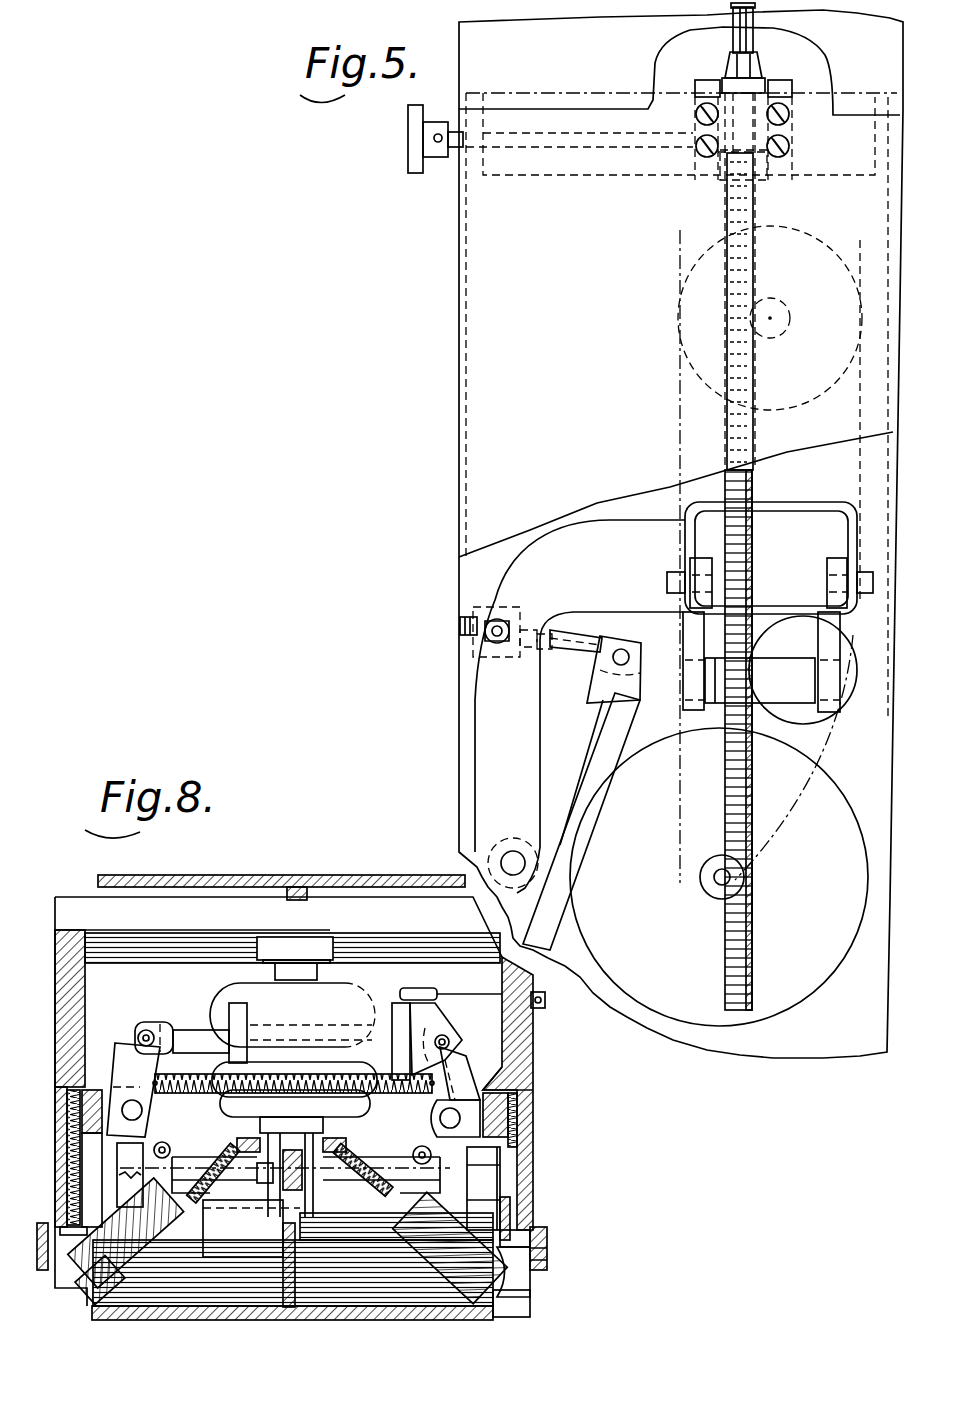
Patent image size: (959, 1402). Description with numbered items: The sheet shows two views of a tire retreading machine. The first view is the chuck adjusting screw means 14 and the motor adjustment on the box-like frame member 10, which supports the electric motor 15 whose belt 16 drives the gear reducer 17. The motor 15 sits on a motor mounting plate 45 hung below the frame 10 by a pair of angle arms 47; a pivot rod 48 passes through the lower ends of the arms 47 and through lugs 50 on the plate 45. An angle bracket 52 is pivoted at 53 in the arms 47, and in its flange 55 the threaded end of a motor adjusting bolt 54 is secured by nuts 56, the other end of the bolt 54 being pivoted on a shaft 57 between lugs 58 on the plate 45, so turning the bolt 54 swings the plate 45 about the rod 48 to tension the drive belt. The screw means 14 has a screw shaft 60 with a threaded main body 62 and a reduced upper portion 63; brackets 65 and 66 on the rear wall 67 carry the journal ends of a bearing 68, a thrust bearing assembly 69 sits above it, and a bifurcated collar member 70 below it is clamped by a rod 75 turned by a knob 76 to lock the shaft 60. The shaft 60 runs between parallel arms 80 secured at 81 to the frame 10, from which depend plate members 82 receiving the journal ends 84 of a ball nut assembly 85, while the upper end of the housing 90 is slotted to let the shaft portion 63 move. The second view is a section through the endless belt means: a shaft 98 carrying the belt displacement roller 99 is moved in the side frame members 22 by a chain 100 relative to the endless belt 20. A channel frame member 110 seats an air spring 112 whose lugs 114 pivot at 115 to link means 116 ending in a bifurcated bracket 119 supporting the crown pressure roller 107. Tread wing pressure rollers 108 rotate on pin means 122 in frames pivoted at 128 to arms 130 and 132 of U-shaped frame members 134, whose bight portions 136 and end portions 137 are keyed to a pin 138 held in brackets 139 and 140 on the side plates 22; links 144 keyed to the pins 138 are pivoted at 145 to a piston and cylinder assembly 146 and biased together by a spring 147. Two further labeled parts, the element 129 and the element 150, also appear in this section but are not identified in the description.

In FIG. 5, the box-like frame member 10 is at (812, 504).
In FIG. 5, the chuck adjusting screw means 14 is at (765, 545).
In FIG. 5, the electric motor 15 is at (808, 996).
In FIG. 5, the belt 16 is at (860, 418).
In FIG. 5, the gear reducer 17 is at (830, 250).
In FIG. 8, the endless belt 20 is at (350, 876).
In FIG. 8, the side frame members 22 is at (70, 930).
In FIG. 5, the motor mounting plate 45 is at (540, 926).
In FIG. 5, the angle arms 47 is at (490, 735).
In FIG. 5, the pivot rod 48 is at (518, 850).
In FIG. 5, the lugs 50 is at (556, 812).
In FIG. 5, the angle bracket 52 is at (462, 614).
In FIG. 5, the pivotal mounting 53 is at (488, 657).
In FIG. 5, the motor adjusting bolt 54 is at (578, 652).
In FIG. 5, the flange 55 is at (528, 625).
In FIG. 5, the nuts 56 is at (560, 628).
In FIG. 5, the shaft 57 is at (628, 660).
In FIG. 5, the lugs 58 is at (600, 700).
In FIG. 5, the screw shaft 60 is at (757, 808).
In FIG. 5, the main body threaded portion 62 is at (752, 930).
In FIG. 5, the reduced shaft upper portion 63 is at (747, 45).
In FIG. 5, the bracket 65 is at (703, 80).
In FIG. 5, the bracket 66 is at (782, 84).
In FIG. 5, the rear wall 67 is at (820, 105).
In FIG. 5, the bearing 68 is at (792, 128).
In FIG. 5, the thrust bearing assembly 69 is at (722, 62).
In FIG. 5, the bifurcated collar member 70 is at (735, 160).
In FIG. 5, the rod 75 is at (638, 145).
In FIG. 5, the knob 76 is at (416, 165).
In FIG. 5, the parallel arms 80 is at (690, 548).
In FIG. 5, the securing point 81 is at (667, 578).
In FIG. 5, the plate members 82 is at (690, 632).
In FIG. 5, the journal ends 84 is at (830, 678).
In FIG. 5, the ball nut assembly 85 is at (700, 742).
In FIG. 5, the housing 90 is at (462, 28).
In FIG. 8, the shaft 98 is at (548, 1268).
In FIG. 8, the belt displacement roller 99 is at (500, 1316).
In FIG. 8, the chain 100 is at (548, 1230).
In FIG. 8, the crown pressure roller 107 is at (230, 1270).
In FIG. 8, the tread wing pressure rollers 108 is at (340, 1162).
In FIG. 8, the channel frame member 110 is at (105, 1010).
In FIG. 8, the air spring 112 is at (222, 1000).
In FIG. 8, the lugs 114 is at (251, 1228).
In FIG. 8, the pivotal connection 115 is at (258, 1175).
In FIG. 8, the link means 116 is at (236, 1143).
In FIG. 8, the bifurcated bracket 119 is at (320, 1138).
In FIG. 8, the bearing supported pin means 122 is at (550, 1203).
In FIG. 8, the pivotal connection 128 is at (148, 1310).
In FIG. 8, the pin 129 is at (163, 1141).
In FIG. 8, the arm 130 is at (500, 1160).
In FIG. 8, the arm 132 is at (492, 1190).
In FIG. 8, the U-shaped frame members 134 is at (106, 1172).
In FIG. 8, the bight portions 136 is at (145, 1128).
In FIG. 8, the intermediate end portions 137 is at (490, 1070).
In FIG. 8, the pin 138 is at (110, 1112).
In FIG. 8, the bracket 139 is at (533, 1063).
In FIG. 8, the bracket 140 is at (533, 1080).
In FIG. 8, the links 144 is at (128, 1062).
In FIG. 8, the pivotal connection 145 is at (144, 1034).
In FIG. 8, the piston and cylinder assembly 146 is at (372, 992).
In FIG. 8, the spring 147 is at (242, 1075).
In FIG. 8, the pin 150 is at (545, 1005).